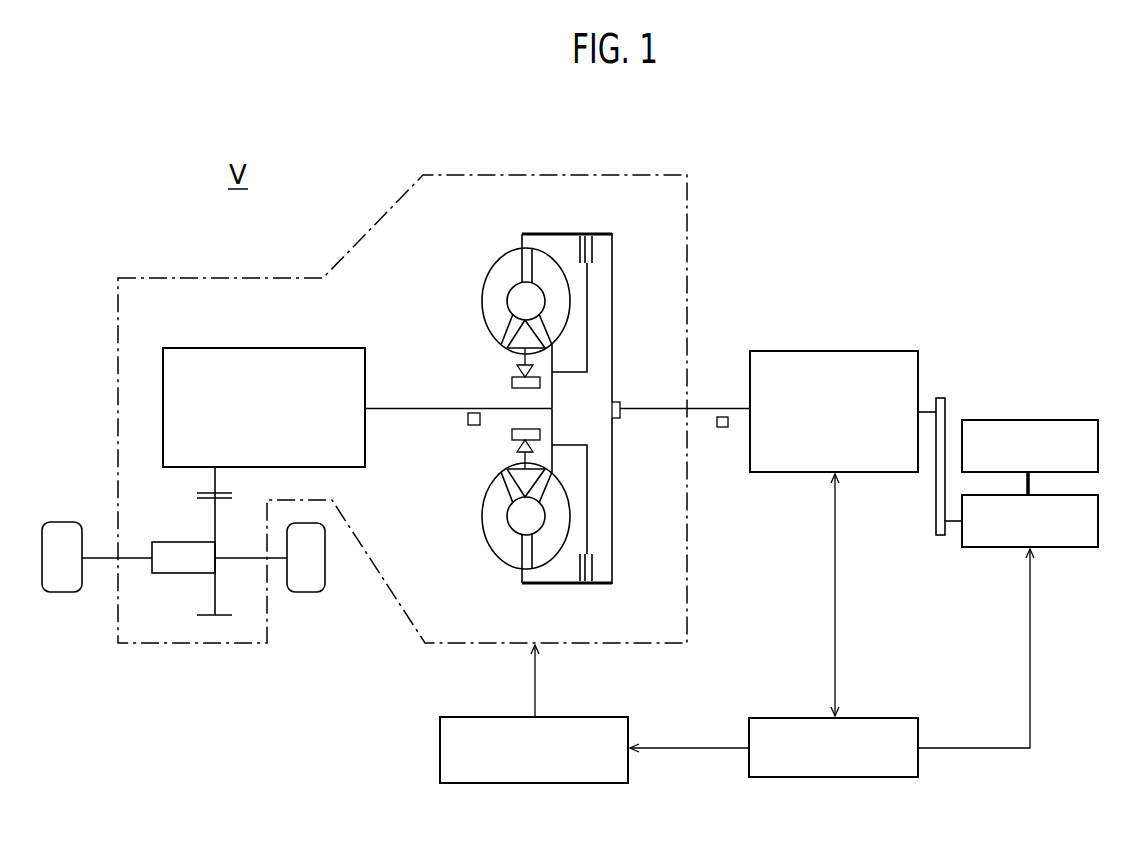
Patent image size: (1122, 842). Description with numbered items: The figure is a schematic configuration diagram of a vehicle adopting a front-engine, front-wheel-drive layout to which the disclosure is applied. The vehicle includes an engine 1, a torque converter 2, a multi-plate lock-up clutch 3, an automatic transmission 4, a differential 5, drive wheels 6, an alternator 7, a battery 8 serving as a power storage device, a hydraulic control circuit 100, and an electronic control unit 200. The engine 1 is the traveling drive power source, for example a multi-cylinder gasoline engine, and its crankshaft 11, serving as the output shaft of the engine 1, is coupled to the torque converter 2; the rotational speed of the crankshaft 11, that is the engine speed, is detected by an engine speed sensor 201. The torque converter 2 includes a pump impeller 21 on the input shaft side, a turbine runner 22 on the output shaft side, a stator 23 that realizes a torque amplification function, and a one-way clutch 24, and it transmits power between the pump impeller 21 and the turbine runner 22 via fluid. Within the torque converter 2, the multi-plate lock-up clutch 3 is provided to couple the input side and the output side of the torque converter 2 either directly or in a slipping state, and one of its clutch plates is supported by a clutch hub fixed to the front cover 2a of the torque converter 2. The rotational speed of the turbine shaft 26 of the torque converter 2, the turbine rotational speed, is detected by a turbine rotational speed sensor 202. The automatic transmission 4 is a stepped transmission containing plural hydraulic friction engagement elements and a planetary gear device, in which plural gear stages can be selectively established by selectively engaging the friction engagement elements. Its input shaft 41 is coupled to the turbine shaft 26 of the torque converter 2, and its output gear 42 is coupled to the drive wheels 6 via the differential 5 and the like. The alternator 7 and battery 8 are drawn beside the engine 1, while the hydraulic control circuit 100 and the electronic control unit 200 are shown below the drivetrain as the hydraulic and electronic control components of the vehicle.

The engine 1 is at (803, 350).
The torque converter 2 is at (498, 232).
The front cover 2a is at (612, 287).
The multi-plate lock-up clutch 3 is at (612, 250).
The automatic transmission 4 is at (292, 347).
The differential 5 is at (176, 582).
The drive wheels 6 is at (61, 587).
The alternator 7 is at (980, 547).
The battery 8 is at (992, 420).
The crankshaft 11 is at (725, 408).
The pump impeller 21 is at (497, 272).
The turbine runner 22 is at (545, 263).
The stator 23 is at (507, 350).
The one-way clutch 24 is at (518, 368).
The turbine shaft 26 is at (500, 410).
The input shaft 41 is at (420, 407).
The output gear 42 is at (197, 493).
The hydraulic control circuit 100 is at (468, 717).
The electronic control unit 200 is at (795, 718).
The engine speed sensor 201 is at (723, 427).
The turbine rotational speed sensor 202 is at (468, 419).